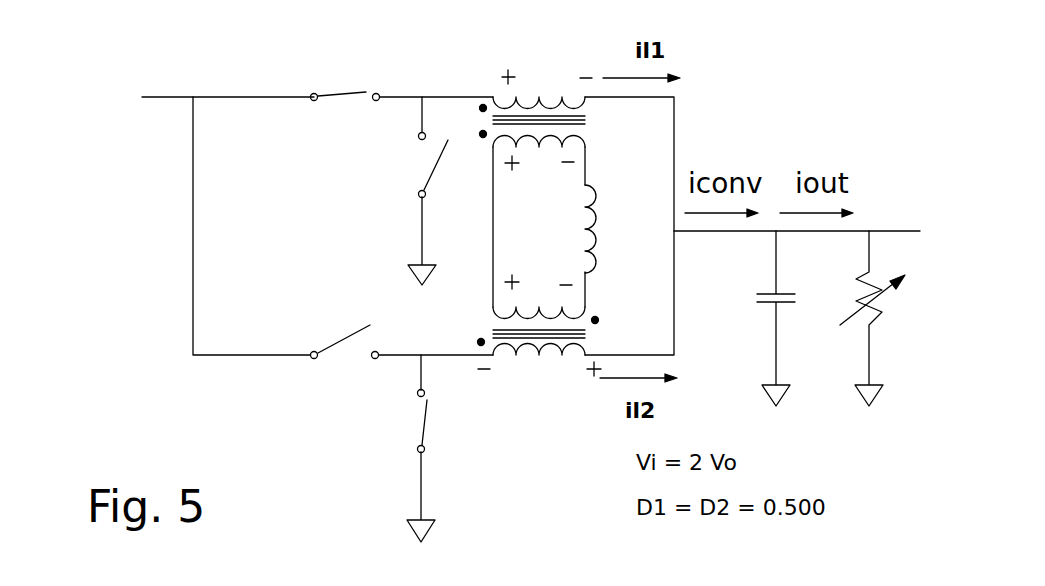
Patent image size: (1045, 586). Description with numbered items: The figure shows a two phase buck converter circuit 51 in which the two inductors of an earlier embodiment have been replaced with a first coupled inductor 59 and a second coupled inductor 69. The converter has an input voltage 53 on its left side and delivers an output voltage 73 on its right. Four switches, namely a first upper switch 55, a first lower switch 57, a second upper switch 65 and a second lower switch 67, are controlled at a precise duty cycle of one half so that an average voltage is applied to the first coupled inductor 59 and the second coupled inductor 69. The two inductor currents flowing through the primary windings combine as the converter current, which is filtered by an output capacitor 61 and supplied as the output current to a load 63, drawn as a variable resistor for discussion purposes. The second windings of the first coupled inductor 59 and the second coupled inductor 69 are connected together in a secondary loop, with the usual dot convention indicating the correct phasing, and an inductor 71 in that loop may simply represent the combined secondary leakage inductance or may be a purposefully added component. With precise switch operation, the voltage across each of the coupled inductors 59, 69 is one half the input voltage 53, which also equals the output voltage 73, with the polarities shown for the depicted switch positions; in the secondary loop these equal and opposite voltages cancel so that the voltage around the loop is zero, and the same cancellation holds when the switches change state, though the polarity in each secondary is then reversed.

The two phase buck converter circuit 51 is at (170, 32).
The input voltage Vi 53 is at (132, 116).
The switch S1a 55 is at (357, 78).
The switch S1b 57 is at (410, 150).
The coupled inductor T1 59 is at (497, 80).
The output capacitor C1 61 is at (785, 310).
The load Ro 63 is at (885, 315).
The switch S2a 65 is at (342, 359).
The switch S2b 67 is at (407, 422).
The coupled inductor T2 69 is at (567, 367).
The inductor L 71 is at (607, 192).
The output voltage Vo 73 is at (877, 218).